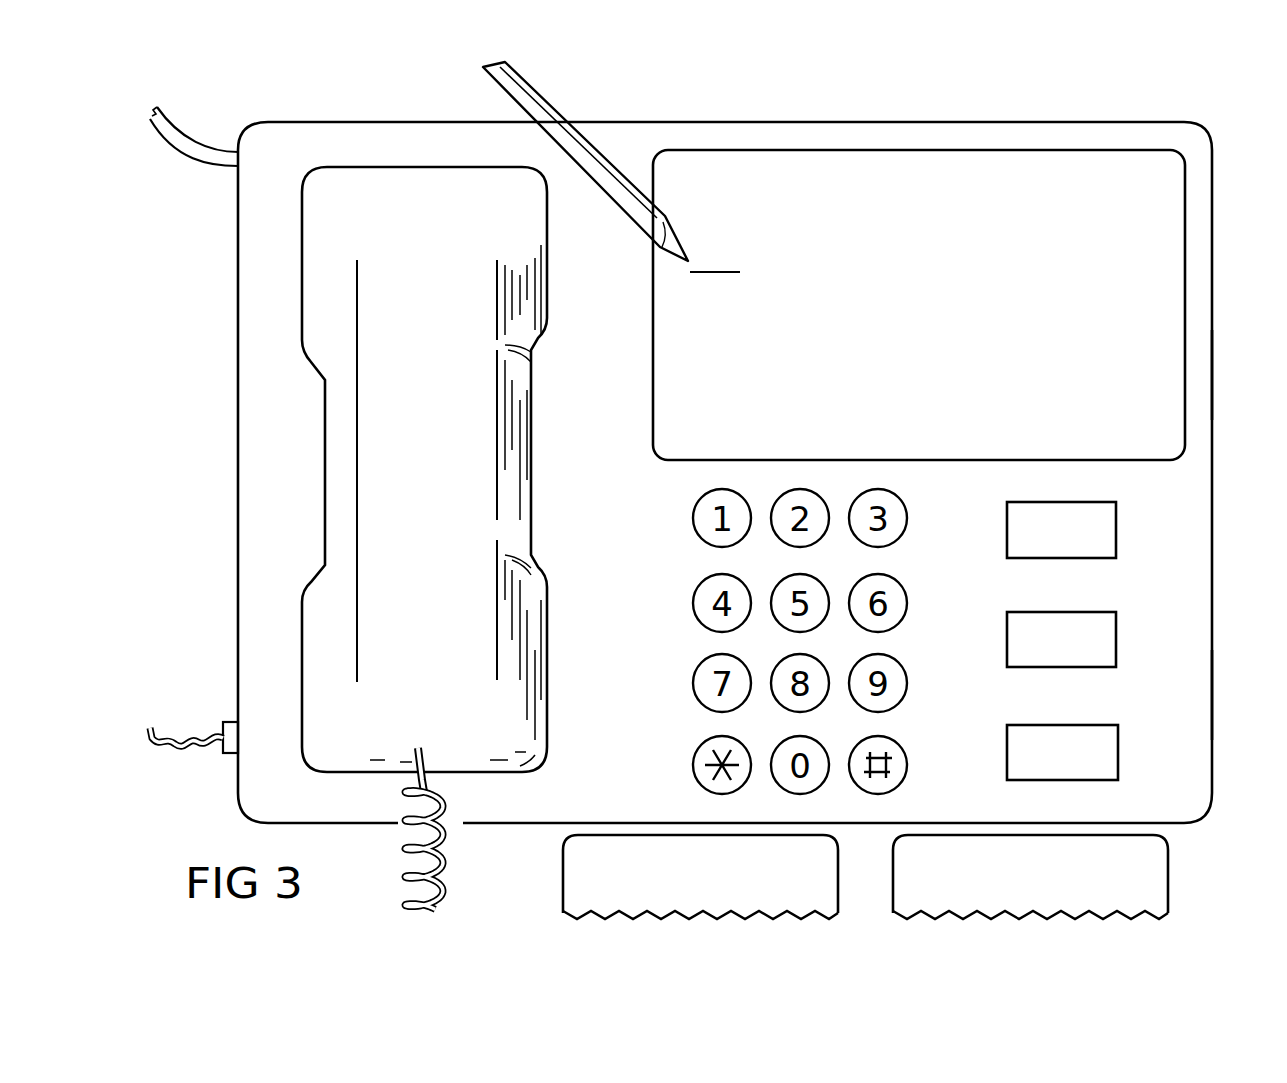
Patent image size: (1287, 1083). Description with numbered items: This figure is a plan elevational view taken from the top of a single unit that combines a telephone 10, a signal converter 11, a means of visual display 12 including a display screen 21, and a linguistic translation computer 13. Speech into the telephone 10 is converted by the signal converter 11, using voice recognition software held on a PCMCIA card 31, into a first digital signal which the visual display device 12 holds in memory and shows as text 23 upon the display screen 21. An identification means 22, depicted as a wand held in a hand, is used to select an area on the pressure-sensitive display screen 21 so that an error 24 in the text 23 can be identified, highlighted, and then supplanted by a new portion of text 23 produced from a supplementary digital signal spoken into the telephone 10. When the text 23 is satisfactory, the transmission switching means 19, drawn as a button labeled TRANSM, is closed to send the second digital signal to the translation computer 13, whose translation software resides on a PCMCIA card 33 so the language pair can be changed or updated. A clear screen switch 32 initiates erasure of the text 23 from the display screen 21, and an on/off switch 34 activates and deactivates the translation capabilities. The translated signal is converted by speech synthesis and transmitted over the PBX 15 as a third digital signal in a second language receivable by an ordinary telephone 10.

The telephone 10 is at (441, 538).
The signal converter 11 is at (253, 402).
The visual display device 12 is at (1200, 382).
The linguistic translation computer 13 is at (1200, 692).
The public exchange (PBX) 15 is at (194, 118).
The transmission switching means 19 is at (1118, 532).
The display screen 21 is at (1180, 283).
The identification means 22 is at (528, 105).
The text 23 is at (1152, 218).
The error 24 is at (685, 282).
The PCMCIA card 31 is at (577, 883).
The clear screen switch 32 is at (1118, 641).
The PCMCIA card 33 is at (1160, 883).
The on/off switch 34 is at (1120, 750).